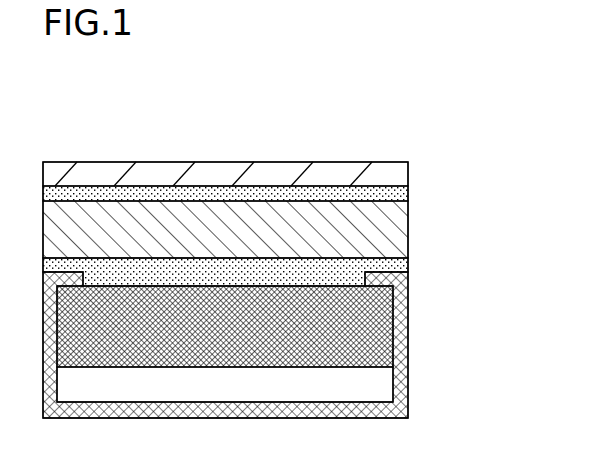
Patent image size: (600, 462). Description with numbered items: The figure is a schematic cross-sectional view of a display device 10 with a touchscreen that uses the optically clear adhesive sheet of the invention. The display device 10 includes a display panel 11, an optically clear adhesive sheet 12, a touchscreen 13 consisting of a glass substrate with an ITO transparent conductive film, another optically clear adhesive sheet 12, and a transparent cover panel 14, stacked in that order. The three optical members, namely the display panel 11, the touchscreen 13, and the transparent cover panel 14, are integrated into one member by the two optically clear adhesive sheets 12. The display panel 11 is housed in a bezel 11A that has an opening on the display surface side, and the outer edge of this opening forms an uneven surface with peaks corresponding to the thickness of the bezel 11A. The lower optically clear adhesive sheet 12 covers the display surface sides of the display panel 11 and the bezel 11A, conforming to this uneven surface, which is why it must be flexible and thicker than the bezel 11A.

The display device 10 is at (426, 122).
The display panel 11 is at (393, 322).
The bezel 11A is at (401, 377).
The optically clear adhesive sheet 12 is at (407, 195).
The touchscreen 13 is at (407, 232).
The transparent cover panel 14 is at (407, 175).